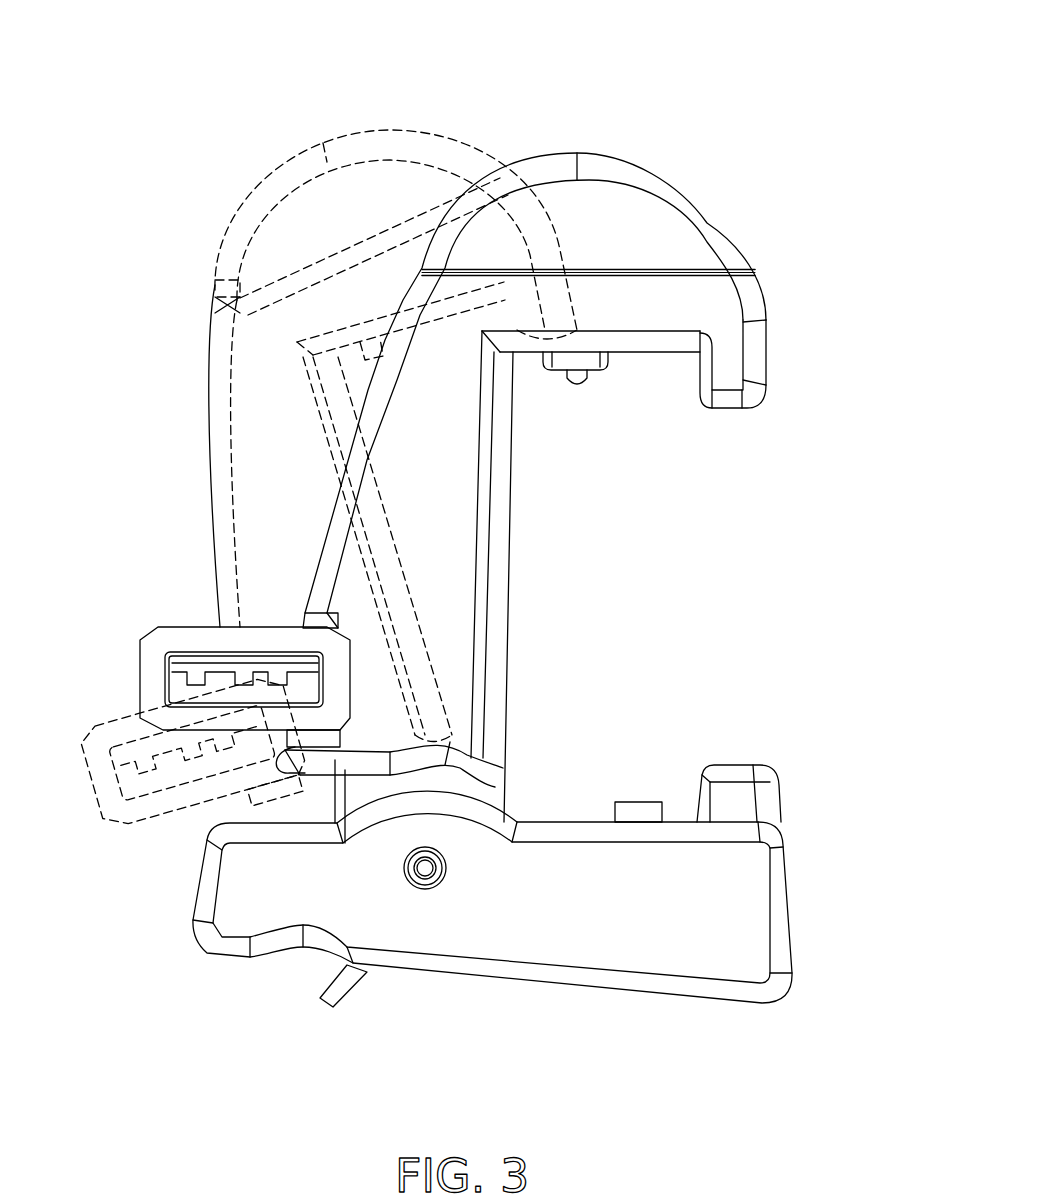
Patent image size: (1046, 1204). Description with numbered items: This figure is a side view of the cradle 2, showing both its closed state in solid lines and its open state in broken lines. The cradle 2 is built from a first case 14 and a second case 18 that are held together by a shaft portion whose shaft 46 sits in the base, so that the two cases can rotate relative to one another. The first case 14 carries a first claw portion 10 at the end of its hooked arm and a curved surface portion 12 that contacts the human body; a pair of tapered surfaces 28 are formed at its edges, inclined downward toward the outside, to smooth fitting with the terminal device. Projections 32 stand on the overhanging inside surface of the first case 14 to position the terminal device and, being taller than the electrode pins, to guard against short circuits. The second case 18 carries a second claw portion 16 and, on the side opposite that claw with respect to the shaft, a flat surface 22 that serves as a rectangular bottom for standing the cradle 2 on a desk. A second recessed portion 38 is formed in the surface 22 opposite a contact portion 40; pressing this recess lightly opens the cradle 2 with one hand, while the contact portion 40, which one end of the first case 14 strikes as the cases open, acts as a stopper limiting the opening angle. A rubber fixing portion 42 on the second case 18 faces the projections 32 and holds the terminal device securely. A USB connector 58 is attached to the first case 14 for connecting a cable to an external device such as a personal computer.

The cradle 2 is at (742, 103).
The first claw portion 10 is at (738, 360).
The curved surface portion 12 is at (630, 153).
The first case 14 is at (480, 555).
The second claw portion 16 is at (733, 790).
The second case 18 is at (757, 942).
The surface 22 is at (590, 990).
The tapered surfaces 28 is at (498, 503).
The projections 32 is at (578, 387).
The second recessed portion 38 is at (300, 947).
The contact portion 40 is at (268, 820).
The fixing portion 42 is at (645, 800).
The shaft 46 is at (427, 873).
The USB connector 58 is at (157, 647).